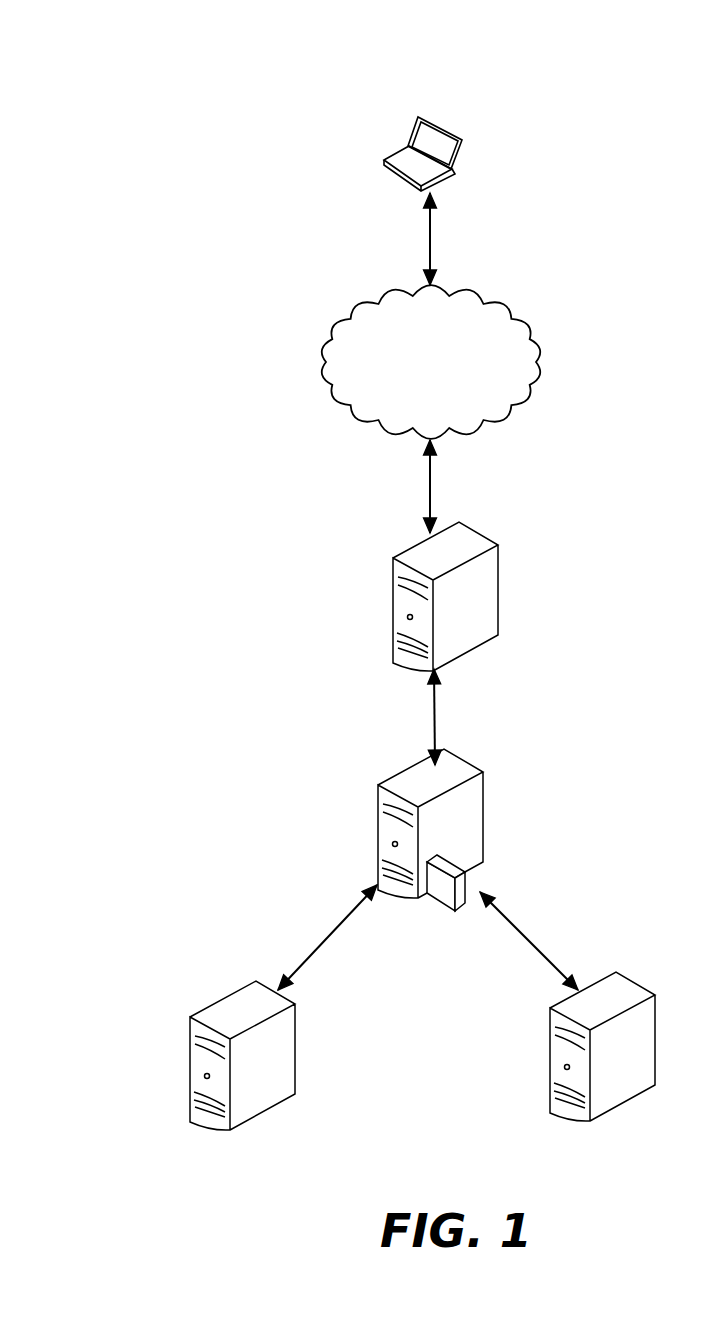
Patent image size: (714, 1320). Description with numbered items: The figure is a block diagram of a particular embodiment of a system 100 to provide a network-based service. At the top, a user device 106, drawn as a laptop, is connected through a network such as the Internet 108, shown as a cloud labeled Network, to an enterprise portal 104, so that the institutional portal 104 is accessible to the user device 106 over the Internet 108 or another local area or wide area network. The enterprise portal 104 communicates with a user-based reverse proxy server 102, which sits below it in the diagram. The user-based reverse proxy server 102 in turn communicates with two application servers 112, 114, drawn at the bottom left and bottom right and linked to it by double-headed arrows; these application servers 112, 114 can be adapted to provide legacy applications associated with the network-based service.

The system 100 is at (117, 107).
The user-based reverse proxy server 102 is at (379, 812).
The enterprise portal 104 is at (393, 583).
The user device 106 is at (396, 155).
The Internet 108 is at (320, 362).
The application server 112 is at (217, 1003).
The application server 114 is at (602, 983).